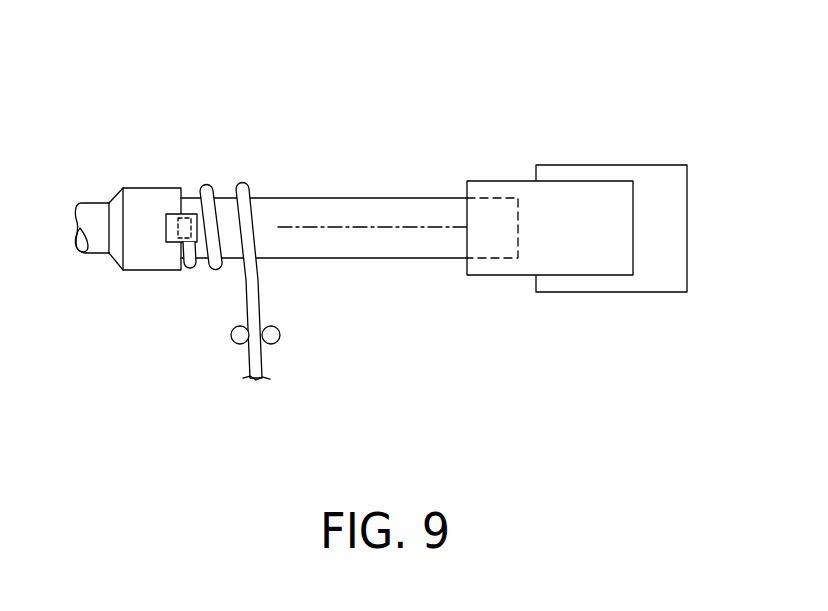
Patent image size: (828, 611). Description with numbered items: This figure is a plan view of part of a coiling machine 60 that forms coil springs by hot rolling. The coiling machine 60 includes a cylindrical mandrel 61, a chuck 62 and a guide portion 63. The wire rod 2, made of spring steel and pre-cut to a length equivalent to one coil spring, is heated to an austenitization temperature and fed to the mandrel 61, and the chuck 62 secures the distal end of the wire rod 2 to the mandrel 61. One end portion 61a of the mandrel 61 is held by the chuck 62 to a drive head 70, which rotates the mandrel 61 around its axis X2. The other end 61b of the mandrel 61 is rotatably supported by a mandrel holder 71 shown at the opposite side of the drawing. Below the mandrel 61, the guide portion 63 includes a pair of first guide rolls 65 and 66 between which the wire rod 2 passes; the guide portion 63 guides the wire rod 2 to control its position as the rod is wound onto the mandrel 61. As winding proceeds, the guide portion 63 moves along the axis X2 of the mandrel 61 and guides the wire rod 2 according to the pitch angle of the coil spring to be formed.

The coiling machine 60 is at (457, 112).
The drive head 70 is at (130, 187).
The mandrel 61 is at (408, 205).
The one end portion of the mandrel 61a is at (193, 207).
The other end of the mandrel 61b is at (494, 212).
The axis of the mandrel X2 is at (332, 227).
The mandrel holder 71 is at (597, 213).
The chuck 62 is at (168, 229).
The wire rod 2 is at (255, 197).
The guide portion 63 is at (292, 333).
The first guide roll 65 is at (240, 342).
The first guide roll 66 is at (272, 342).